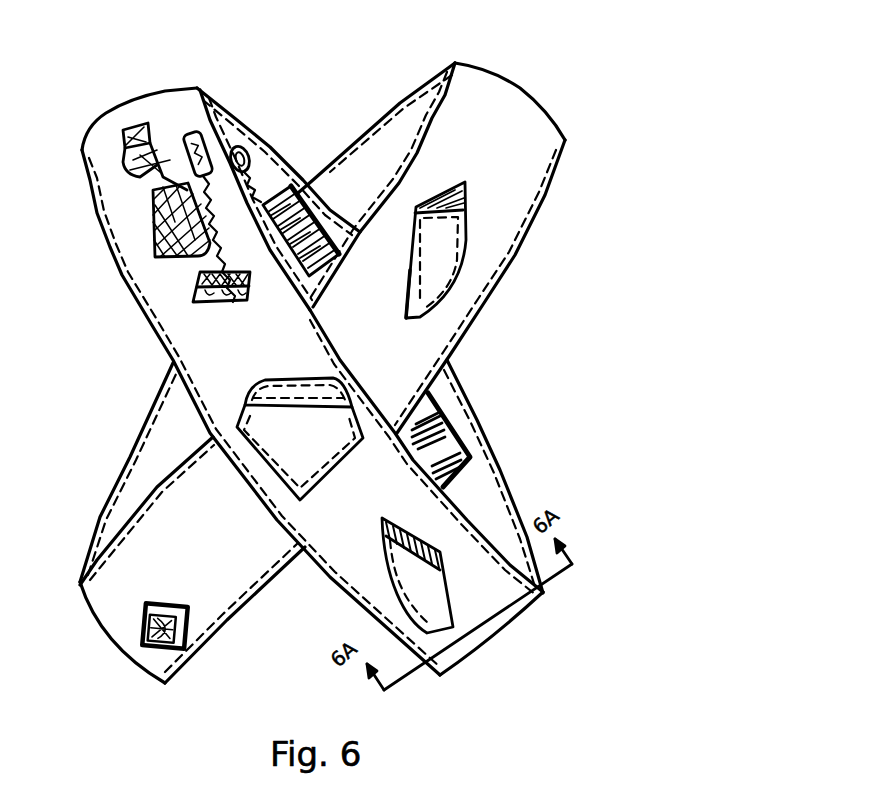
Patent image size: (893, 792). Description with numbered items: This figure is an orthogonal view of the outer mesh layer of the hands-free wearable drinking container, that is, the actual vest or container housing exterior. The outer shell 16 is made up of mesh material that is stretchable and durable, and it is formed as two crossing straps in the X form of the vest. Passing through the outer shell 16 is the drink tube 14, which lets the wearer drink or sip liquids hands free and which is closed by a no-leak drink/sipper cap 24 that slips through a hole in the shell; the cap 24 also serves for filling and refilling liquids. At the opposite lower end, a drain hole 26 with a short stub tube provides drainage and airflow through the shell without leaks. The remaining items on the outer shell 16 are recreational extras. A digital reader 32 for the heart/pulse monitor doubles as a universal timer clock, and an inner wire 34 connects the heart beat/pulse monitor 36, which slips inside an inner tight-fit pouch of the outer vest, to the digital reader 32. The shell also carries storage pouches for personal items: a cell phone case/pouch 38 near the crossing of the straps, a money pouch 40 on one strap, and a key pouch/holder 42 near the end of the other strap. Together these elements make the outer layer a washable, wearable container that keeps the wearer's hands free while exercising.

The drink tube 14 is at (170, 222).
The outer shell 16 is at (520, 96).
The drink/sipper cap 24 is at (132, 126).
The drain hole 26 is at (184, 646).
The digital reader 32 is at (203, 303).
The inner wire 34 is at (236, 146).
The heart beat/pulse monitor 36 is at (447, 450).
The cell phone case/pouch 38 is at (300, 443).
The money pouch 40 is at (447, 263).
The key pouch/holder 42 is at (432, 618).